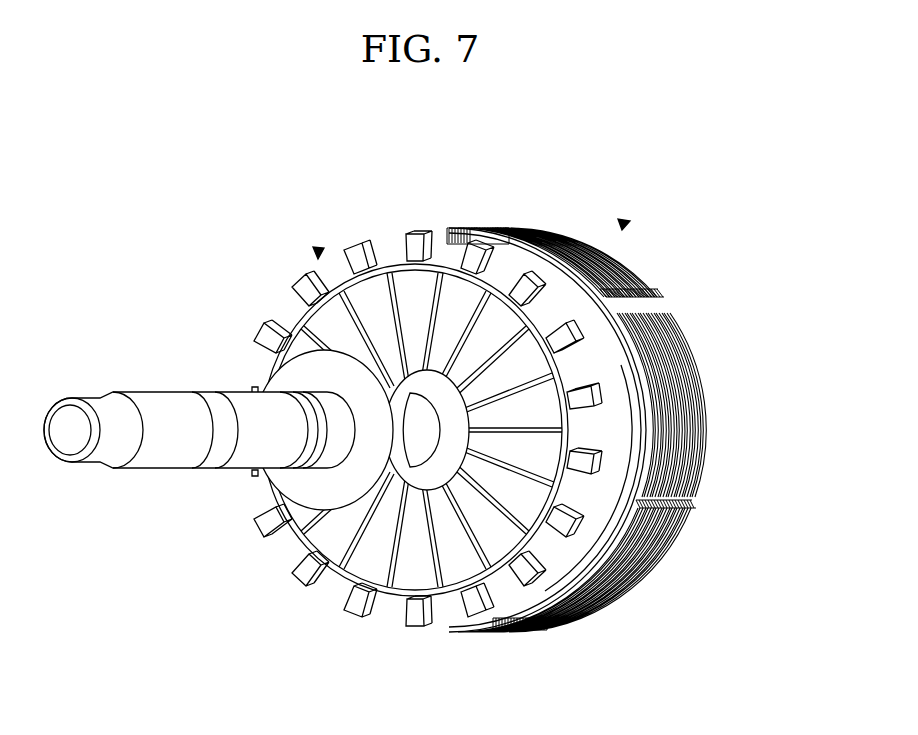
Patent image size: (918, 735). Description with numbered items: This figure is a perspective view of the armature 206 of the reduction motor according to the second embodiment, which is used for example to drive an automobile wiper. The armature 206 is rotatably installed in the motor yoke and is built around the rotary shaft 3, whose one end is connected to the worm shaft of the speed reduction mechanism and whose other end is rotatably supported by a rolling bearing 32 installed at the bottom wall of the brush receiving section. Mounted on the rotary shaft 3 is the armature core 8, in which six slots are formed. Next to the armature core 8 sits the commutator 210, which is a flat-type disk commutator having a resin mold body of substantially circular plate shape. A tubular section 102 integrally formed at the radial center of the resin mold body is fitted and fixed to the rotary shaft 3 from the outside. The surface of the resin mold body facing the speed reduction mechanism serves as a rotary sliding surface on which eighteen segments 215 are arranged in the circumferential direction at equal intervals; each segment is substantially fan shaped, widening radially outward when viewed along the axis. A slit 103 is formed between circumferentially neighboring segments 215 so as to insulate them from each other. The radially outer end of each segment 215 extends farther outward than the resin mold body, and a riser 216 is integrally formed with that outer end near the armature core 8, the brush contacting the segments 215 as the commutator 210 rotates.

The rotary shaft 3 is at (163, 452).
The armature core 8 is at (696, 408).
The rolling bearing 32 is at (303, 485).
The tubular section 102 is at (415, 478).
The slit 103 is at (508, 340).
The armature 206 is at (624, 226).
The commutator 210 is at (318, 255).
The segments 215 is at (545, 458).
The riser 216 is at (532, 577).